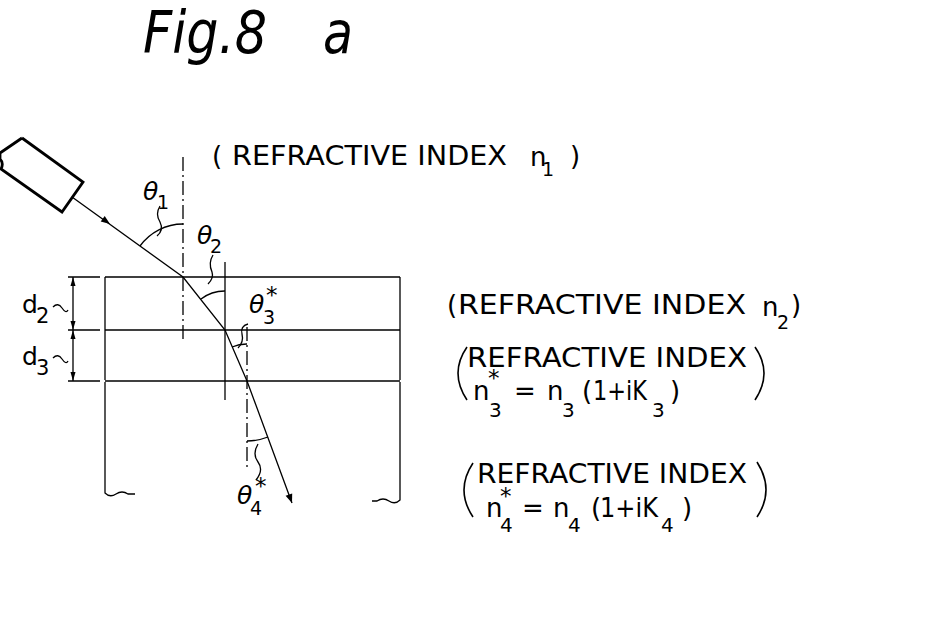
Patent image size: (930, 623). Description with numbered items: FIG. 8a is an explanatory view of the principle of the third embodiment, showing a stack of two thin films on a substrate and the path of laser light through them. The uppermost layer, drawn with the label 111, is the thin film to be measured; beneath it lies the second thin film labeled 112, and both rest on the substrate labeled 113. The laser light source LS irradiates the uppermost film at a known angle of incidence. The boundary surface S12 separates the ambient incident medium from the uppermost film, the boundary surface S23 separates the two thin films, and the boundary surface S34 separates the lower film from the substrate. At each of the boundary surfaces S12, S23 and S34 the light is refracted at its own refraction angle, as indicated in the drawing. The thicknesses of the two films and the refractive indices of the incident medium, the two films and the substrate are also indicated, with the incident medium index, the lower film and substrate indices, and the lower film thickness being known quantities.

The first layer (refractive index n2) 111 is at (396, 309).
The second layer (refractive index n3*) 112 is at (396, 368).
The substrate (refractive index n4*) 113 is at (396, 484).
The laser light source LS is at (50, 168).
The boundary surface S12 is at (373, 270).
The boundary surface S23 is at (306, 333).
The boundary surface S34 is at (364, 385).